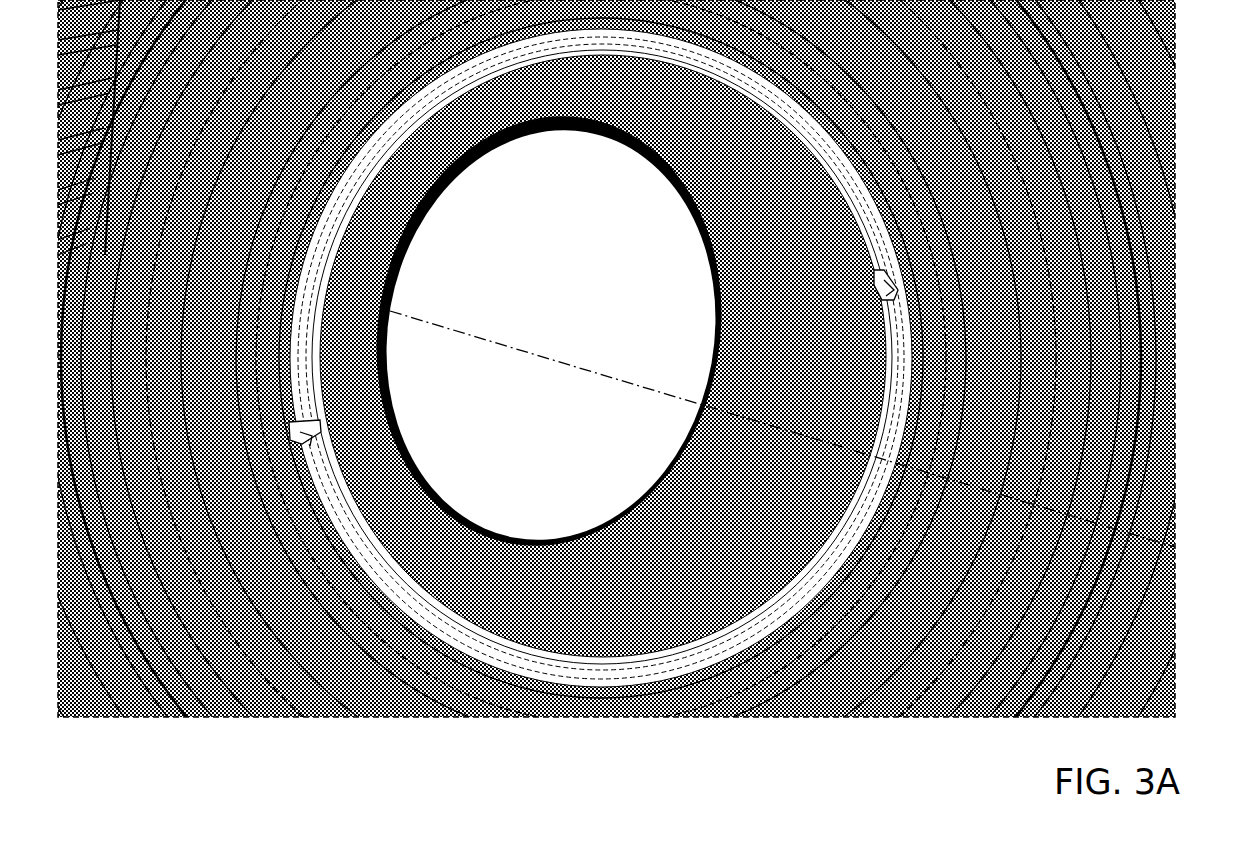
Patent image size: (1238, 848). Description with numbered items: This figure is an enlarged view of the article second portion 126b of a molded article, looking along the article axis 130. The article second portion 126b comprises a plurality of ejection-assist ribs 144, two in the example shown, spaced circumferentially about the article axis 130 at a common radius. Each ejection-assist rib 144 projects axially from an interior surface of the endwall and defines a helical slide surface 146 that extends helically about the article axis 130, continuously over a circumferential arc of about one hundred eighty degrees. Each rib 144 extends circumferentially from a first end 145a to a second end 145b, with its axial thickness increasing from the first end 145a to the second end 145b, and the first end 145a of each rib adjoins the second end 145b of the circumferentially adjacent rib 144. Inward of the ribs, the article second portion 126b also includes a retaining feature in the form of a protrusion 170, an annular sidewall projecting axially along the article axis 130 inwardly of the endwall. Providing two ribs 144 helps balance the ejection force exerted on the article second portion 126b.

The article second portion 126b is at (866, 171).
The article axis 130 is at (578, 352).
The ejection-assist rib 144 is at (294, 251).
The first end 145a is at (297, 444).
The second end 145b is at (910, 289).
The helical slide surface 146 is at (320, 402).
The protrusion 170 is at (517, 140).